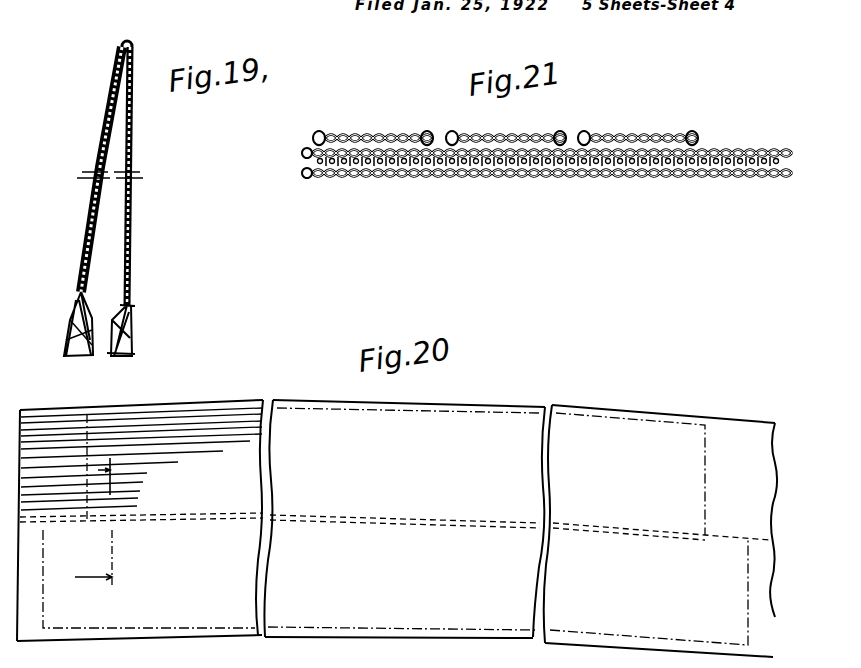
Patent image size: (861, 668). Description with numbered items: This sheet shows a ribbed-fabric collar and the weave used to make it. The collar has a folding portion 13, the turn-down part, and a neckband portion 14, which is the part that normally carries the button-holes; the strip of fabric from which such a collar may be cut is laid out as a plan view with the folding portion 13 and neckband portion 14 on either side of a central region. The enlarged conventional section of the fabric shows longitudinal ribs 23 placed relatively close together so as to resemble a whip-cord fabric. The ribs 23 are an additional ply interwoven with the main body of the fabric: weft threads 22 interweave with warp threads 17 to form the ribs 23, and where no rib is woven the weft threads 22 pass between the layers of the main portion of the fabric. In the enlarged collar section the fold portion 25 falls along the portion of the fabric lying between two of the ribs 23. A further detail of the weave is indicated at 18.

In FIG. 19, the folding portion 13 is at (88, 206).
In FIG. 20, the folding portion 13 is at (397, 521).
In FIG. 19, the neckband portion 14 is at (142, 213).
In FIG. 20, the neckband portion 14 is at (395, 593).
In FIG. 21, the warp threads 17 is at (364, 134).
In FIG. 21, the lower cord 18 is at (314, 152).
In FIG. 21, the weft threads 22 is at (422, 133).
In FIG. 20, the weft threads 22 is at (85, 521).
In FIG. 21, the ribs 23 is at (518, 129).
In FIG. 19, the fold portion 25 is at (131, 42).